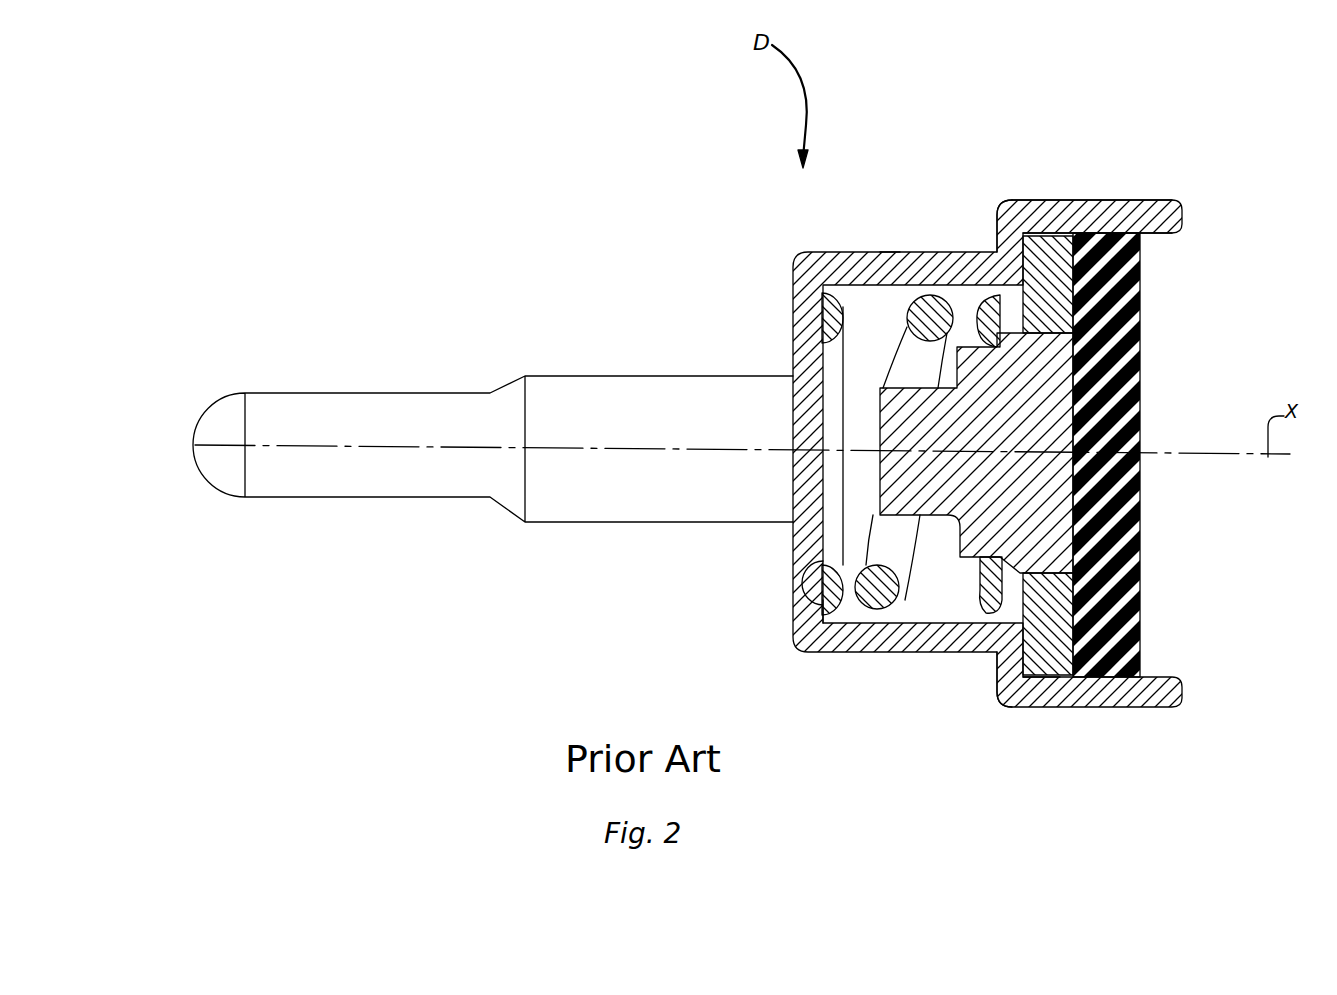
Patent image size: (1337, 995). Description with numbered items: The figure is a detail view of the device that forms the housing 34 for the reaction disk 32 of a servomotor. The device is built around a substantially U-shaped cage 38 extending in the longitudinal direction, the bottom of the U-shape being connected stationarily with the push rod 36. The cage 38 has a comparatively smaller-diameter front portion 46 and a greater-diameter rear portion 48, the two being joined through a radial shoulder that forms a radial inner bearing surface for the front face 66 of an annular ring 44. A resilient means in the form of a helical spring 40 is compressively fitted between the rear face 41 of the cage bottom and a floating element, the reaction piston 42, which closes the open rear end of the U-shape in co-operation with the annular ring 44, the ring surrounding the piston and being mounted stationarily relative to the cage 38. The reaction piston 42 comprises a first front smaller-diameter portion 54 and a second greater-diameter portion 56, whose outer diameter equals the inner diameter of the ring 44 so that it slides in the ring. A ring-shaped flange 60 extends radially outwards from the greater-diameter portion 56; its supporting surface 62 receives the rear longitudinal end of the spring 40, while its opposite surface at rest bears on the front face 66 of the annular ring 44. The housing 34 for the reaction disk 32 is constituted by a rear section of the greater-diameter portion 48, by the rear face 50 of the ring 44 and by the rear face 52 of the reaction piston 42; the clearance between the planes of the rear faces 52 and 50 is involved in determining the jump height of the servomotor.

The reaction disk 32 is at (1135, 408).
The housing 34 is at (1135, 200).
The push rod 36 is at (410, 485).
The cage 38 is at (797, 253).
The helical spring 40 is at (868, 615).
The rear face 41 is at (806, 630).
The reaction piston 42 is at (953, 556).
The annular ring 44 is at (1060, 212).
The front portion 46 is at (890, 252).
The rear portion 48 is at (1005, 205).
The rear face 50 is at (1133, 270).
The rear face 52 is at (1133, 356).
The smaller-diameter portion 54 is at (925, 512).
The greater-diameter portion 56 is at (1053, 703).
The flange 60 is at (1002, 675).
The supporting surface 62 is at (1030, 218).
The front face 66 is at (1034, 700).